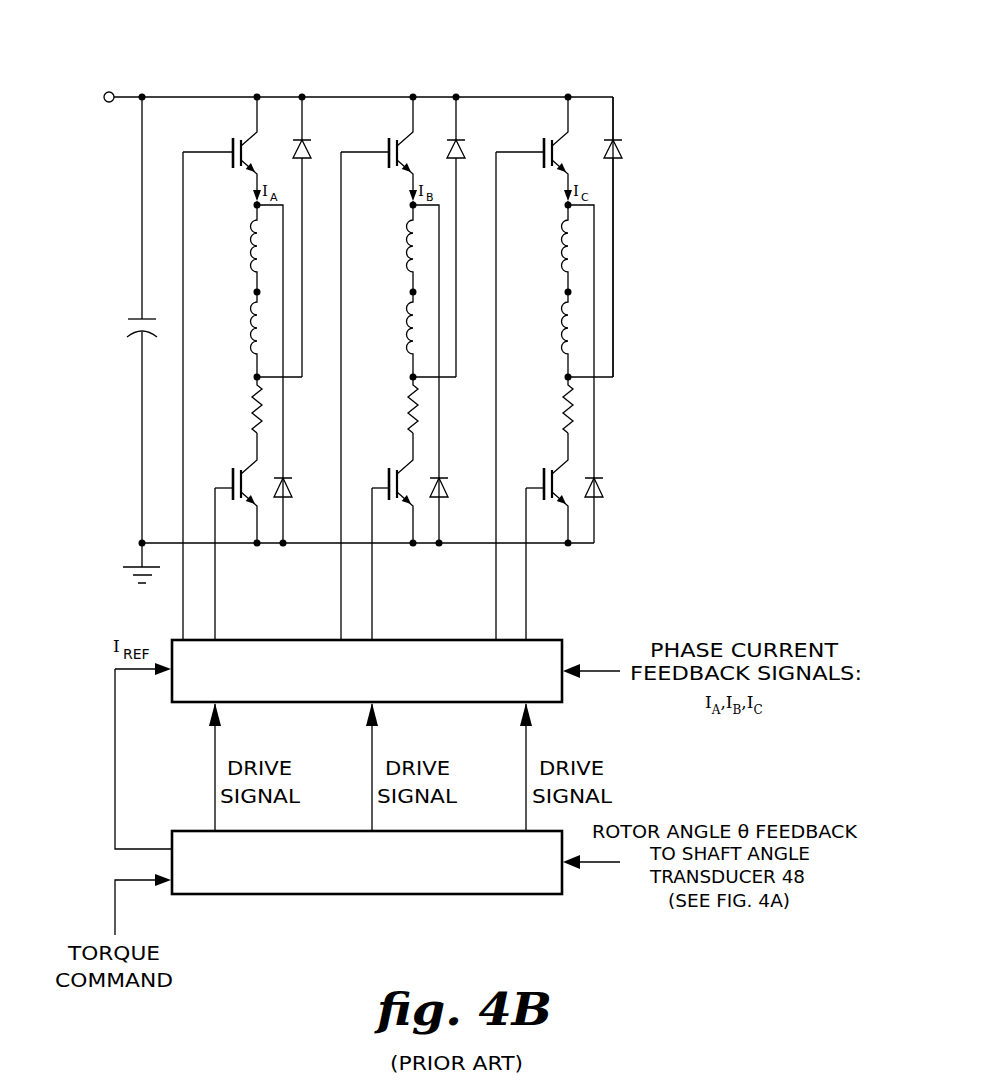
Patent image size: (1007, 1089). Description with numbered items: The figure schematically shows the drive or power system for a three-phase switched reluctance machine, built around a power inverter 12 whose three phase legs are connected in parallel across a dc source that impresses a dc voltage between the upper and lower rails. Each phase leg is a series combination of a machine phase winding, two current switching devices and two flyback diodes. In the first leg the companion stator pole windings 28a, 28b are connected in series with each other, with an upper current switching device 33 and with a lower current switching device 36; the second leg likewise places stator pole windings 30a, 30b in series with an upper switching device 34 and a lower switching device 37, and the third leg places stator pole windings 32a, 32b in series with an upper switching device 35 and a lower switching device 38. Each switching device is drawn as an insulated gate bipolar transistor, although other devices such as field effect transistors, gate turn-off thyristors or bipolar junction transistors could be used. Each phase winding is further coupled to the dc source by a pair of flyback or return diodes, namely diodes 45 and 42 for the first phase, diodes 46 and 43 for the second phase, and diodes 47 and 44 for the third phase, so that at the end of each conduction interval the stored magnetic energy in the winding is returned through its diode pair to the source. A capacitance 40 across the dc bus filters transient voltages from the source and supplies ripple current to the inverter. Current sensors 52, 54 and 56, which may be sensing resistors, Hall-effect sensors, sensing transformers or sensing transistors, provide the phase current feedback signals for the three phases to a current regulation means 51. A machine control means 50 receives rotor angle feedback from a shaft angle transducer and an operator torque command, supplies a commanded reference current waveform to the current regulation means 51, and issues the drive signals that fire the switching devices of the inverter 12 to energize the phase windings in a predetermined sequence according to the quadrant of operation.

The power inverter 12 is at (713, 113).
The stator pole winding 28a is at (252, 250).
The stator pole winding 28b is at (252, 340).
The stator pole winding 30a is at (408, 250).
The stator pole winding 30b is at (408, 340).
The stator pole winding 32a is at (563, 250).
The stator pole winding 32b is at (563, 340).
The upper current switching device 33 is at (245, 132).
The upper current switching device 34 is at (403, 127).
The upper current switching device 35 is at (558, 127).
The lower current switching device 36 is at (247, 468).
The lower current switching device 37 is at (403, 468).
The lower current switching device 38 is at (558, 468).
The capacitance 40 is at (133, 319).
The flyback diode 42 is at (293, 150).
The flyback diode 43 is at (453, 148).
The flyback diode 44 is at (625, 150).
The flyback diode 45 is at (290, 487).
The flyback diode 46 is at (446, 487).
The flyback diode 47 is at (604, 490).
The machine control means 50 is at (343, 895).
The current regulation means 51 is at (547, 640).
The current sensor 52 is at (253, 415).
The current sensor 54 is at (409, 415).
The current sensor 56 is at (564, 415).